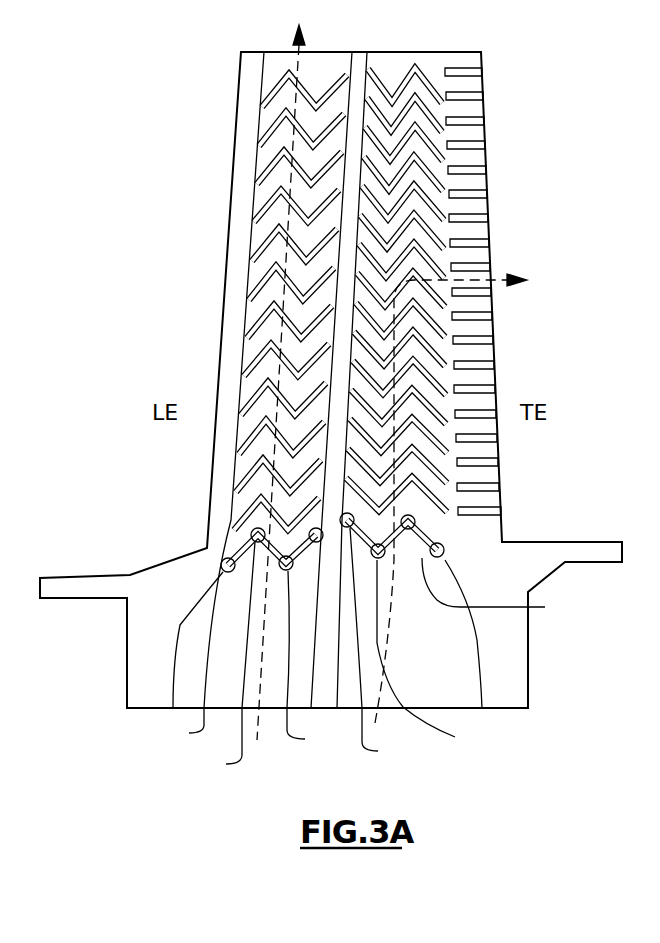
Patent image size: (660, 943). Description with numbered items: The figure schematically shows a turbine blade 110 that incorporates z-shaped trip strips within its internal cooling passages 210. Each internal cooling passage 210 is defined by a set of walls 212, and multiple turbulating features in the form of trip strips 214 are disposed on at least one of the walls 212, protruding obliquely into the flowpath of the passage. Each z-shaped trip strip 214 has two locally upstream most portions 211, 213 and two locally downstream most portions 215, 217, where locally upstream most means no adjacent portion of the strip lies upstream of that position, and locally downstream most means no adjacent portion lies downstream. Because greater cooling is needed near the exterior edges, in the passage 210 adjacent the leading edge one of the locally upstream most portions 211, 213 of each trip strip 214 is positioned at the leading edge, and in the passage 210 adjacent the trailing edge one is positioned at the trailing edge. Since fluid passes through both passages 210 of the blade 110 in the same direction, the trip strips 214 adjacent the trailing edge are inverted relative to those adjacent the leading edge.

The blade 110 is at (190, 326).
The internal cooling passage 210 is at (325, 52).
The locally upstream most portion 211 is at (538, 527).
The wall 212 is at (278, 63).
The locally upstream most portion 213 is at (393, 657).
The trip strip 214 is at (268, 246).
The locally downstream most portion 215 is at (410, 515).
The locally downstream most portion 217 is at (350, 516).